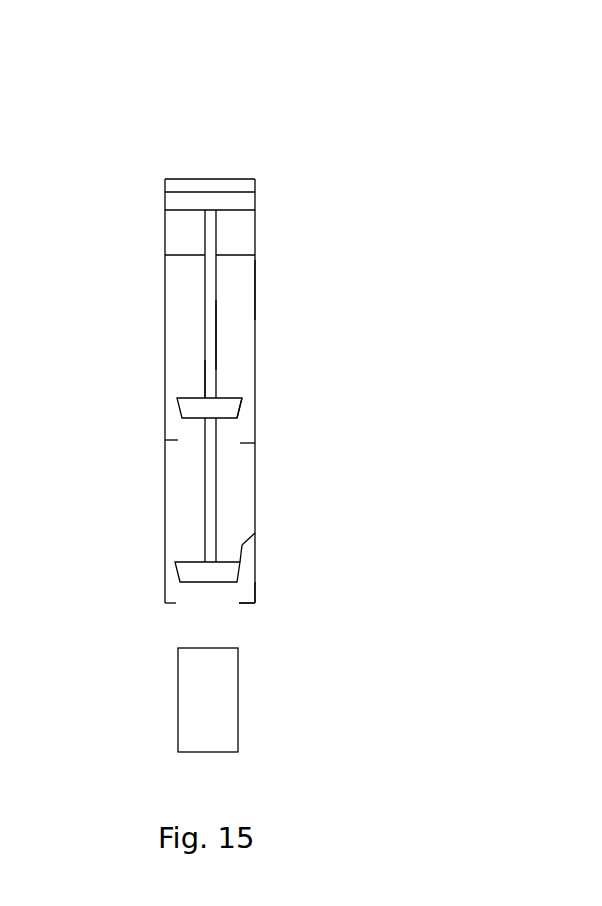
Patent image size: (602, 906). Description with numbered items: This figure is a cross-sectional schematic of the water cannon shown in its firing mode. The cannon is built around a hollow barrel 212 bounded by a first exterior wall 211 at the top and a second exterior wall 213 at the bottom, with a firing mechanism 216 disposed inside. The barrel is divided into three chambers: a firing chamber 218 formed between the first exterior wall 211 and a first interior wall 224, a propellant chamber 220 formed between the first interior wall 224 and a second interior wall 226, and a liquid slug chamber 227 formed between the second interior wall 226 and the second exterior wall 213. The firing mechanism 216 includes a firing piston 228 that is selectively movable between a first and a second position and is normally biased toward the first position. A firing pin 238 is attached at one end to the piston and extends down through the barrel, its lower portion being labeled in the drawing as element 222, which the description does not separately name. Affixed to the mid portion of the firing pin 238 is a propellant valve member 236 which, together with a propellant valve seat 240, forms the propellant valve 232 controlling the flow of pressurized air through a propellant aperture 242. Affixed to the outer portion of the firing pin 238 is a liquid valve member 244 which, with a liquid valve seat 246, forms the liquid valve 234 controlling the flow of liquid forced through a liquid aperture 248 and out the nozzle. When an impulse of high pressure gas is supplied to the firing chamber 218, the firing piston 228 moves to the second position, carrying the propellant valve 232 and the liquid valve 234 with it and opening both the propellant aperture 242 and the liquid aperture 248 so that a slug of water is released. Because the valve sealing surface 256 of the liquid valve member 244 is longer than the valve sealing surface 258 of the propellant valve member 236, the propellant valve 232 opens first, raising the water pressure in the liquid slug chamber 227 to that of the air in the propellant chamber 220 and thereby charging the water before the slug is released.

The first exterior wall 211 is at (212, 178).
The firing piston 228 is at (229, 194).
The firing chamber 218 is at (143, 210).
The first interior wall 224 is at (243, 253).
The firing pin 238 is at (205, 352).
The propellant chamber 220 is at (279, 273).
The firing mechanism 216 is at (268, 319).
The propellant valve 232 is at (258, 375).
The valve sealing surface of the propellant valve member 258 is at (178, 412).
The propellant valve member 236 is at (235, 408).
The propellant valve seat 240 is at (170, 443).
The propellant aperture 242 is at (169, 463).
The second interior wall 226 is at (255, 444).
The liquid slug chamber 227 is at (260, 479).
The stem lower portion 222 is at (267, 505).
The hollow barrel 212 is at (255, 533).
The liquid valve member 244 is at (242, 545).
The valve sealing surface of the liquid valve member 256 is at (180, 573).
The liquid valve 234 is at (277, 601).
The second exterior wall 213 is at (245, 605).
The liquid aperture 248 is at (188, 602).
The liquid valve seat 246 is at (242, 602).